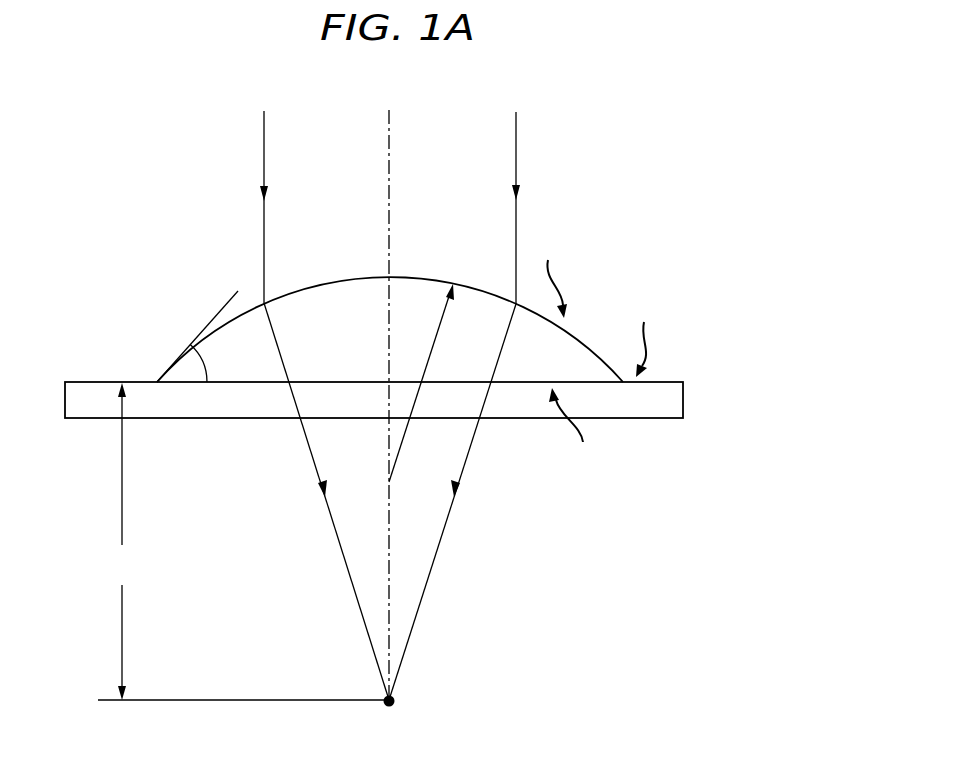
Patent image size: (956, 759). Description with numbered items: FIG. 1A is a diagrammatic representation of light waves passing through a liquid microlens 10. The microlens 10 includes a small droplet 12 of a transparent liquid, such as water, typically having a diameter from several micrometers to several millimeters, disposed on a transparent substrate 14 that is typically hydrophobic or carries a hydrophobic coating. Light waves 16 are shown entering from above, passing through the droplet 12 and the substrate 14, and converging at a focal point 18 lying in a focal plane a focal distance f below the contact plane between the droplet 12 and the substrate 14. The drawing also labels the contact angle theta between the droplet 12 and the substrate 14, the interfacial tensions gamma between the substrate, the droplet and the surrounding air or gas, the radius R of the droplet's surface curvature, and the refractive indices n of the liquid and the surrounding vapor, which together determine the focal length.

The liquid microlens 10 is at (138, 194).
The droplet 12 is at (407, 277).
The substrate 14 is at (685, 402).
The light waves 16 is at (263, 125).
The focal point 18 is at (396, 702).